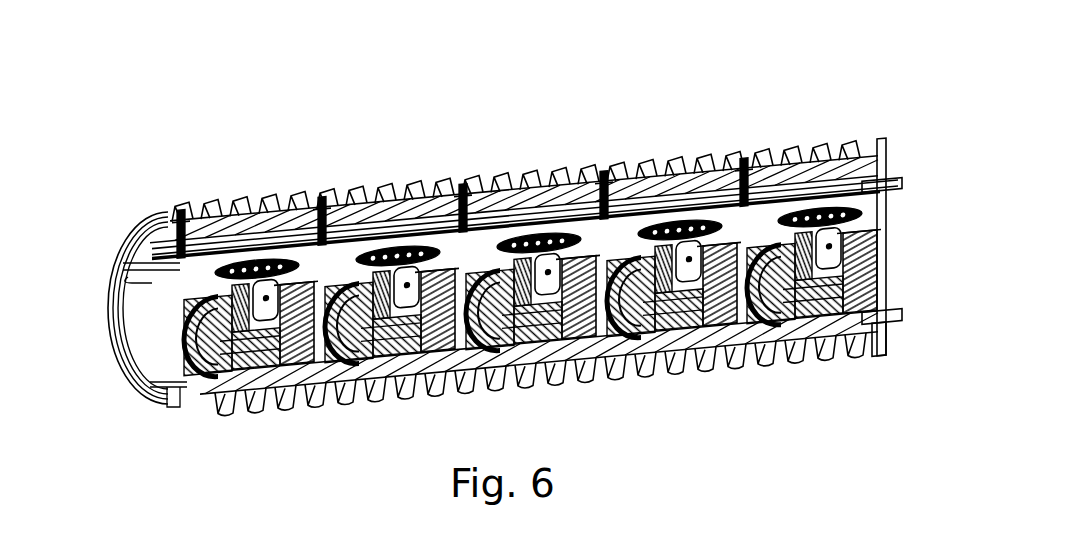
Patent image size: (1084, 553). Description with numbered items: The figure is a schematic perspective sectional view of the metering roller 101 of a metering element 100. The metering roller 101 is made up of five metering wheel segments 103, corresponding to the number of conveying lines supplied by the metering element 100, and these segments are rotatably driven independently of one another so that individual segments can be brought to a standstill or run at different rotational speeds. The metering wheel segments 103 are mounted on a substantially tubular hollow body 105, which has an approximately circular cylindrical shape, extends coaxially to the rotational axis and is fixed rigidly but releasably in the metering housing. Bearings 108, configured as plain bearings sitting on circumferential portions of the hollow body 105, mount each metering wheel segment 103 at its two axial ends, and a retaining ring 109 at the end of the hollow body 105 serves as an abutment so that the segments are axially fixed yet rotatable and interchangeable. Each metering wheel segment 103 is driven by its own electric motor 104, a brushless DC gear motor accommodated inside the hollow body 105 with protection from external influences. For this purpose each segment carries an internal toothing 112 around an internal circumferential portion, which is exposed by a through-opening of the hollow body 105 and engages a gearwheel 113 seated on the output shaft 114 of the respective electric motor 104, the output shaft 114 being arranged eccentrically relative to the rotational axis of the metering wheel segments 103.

The metering element 100 is at (700, 104).
The metering roller 101 is at (812, 122).
The metering wheel segment 103 is at (330, 402).
The electric motor 104 is at (860, 258).
The substantially tubular hollow body 105 is at (140, 237).
The bearing 108 is at (226, 235).
The retaining ring 109 is at (880, 337).
The internal toothing 112 is at (265, 245).
The gearwheel 113 is at (381, 187).
The output shaft 114 is at (406, 192).